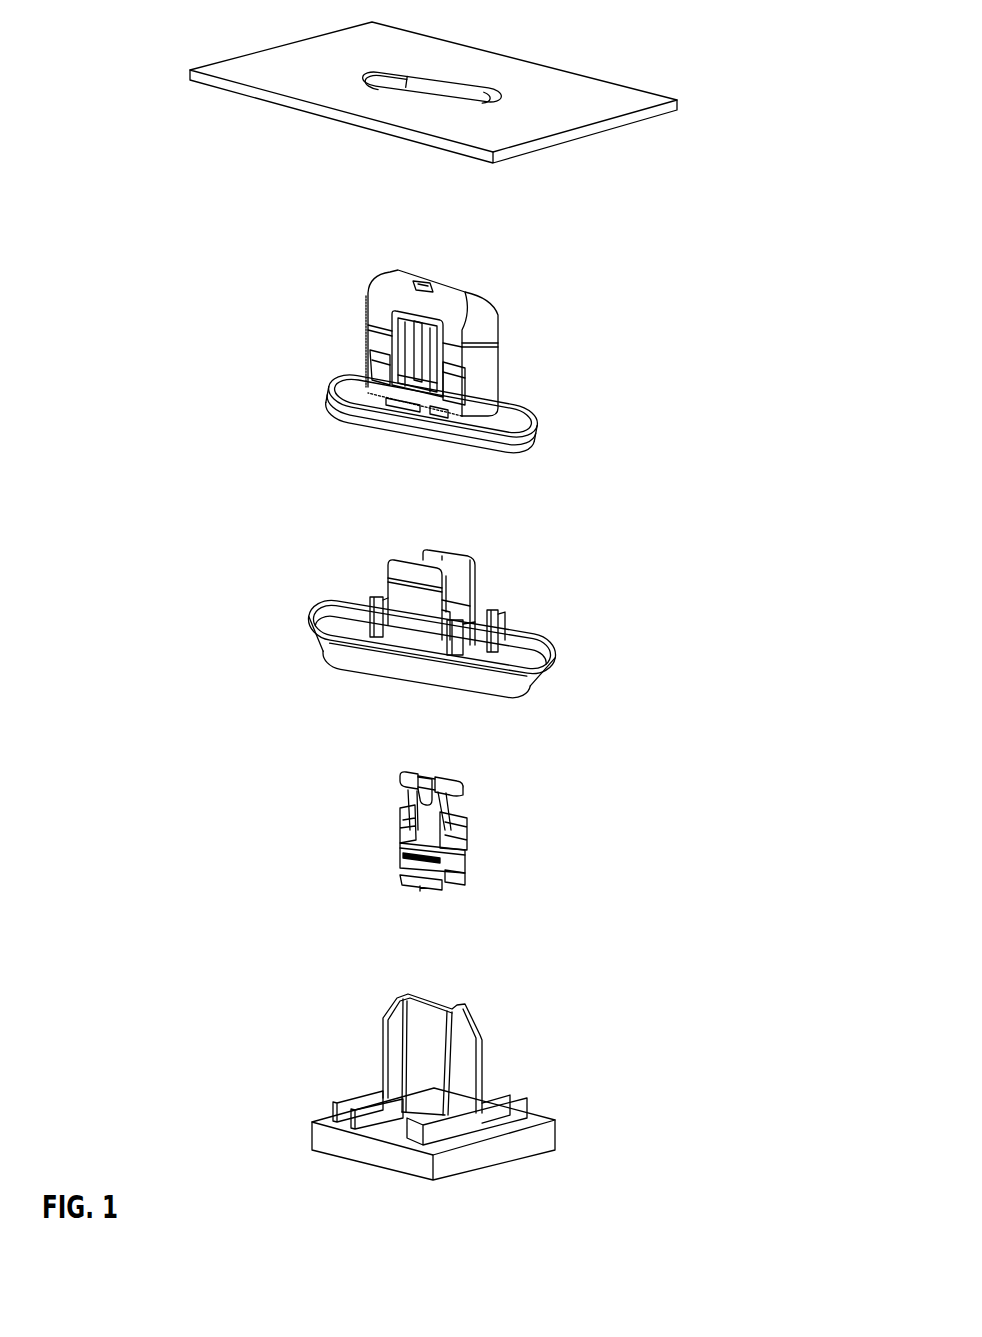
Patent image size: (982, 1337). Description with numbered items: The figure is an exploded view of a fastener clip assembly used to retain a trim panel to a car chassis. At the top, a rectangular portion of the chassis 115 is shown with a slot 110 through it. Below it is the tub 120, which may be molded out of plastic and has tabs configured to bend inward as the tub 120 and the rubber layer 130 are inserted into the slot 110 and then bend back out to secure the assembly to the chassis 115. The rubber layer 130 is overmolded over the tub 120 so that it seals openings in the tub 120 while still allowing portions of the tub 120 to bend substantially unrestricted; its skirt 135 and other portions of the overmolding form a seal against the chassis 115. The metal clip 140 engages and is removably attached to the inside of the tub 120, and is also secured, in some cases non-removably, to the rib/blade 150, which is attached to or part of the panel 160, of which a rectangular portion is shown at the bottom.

The slot 110 is at (437, 88).
The chassis 115 is at (498, 88).
The tub 120 is at (652, 295).
The rubber layer 130 is at (553, 616).
The skirt 135 is at (553, 663).
The metal clip 140 is at (610, 811).
The rib/blade 150 is at (475, 1047).
The panel 160 is at (529, 1069).